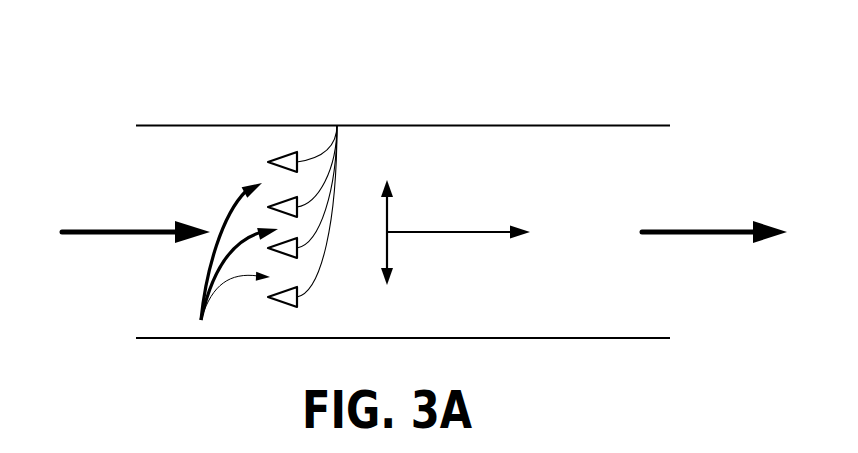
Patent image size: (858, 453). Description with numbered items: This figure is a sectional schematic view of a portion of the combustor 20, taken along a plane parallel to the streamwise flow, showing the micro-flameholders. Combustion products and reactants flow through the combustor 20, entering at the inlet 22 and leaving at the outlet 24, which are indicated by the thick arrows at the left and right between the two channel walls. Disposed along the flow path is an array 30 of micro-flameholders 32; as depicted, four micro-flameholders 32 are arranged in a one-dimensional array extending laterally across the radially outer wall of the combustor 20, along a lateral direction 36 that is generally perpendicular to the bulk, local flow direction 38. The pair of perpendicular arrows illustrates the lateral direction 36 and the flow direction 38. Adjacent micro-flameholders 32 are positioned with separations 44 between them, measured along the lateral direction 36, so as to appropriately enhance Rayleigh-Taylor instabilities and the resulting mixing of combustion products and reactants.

The combustor 20 is at (249, 92).
The inlet 22 is at (135, 228).
The outlet 24 is at (735, 222).
The array 30 is at (255, 322).
The micro-flameholder 32 is at (337, 126).
The lateral direction 36 is at (392, 250).
The bulk local flow direction 38 is at (442, 230).
The lateral separation 44 is at (200, 322).